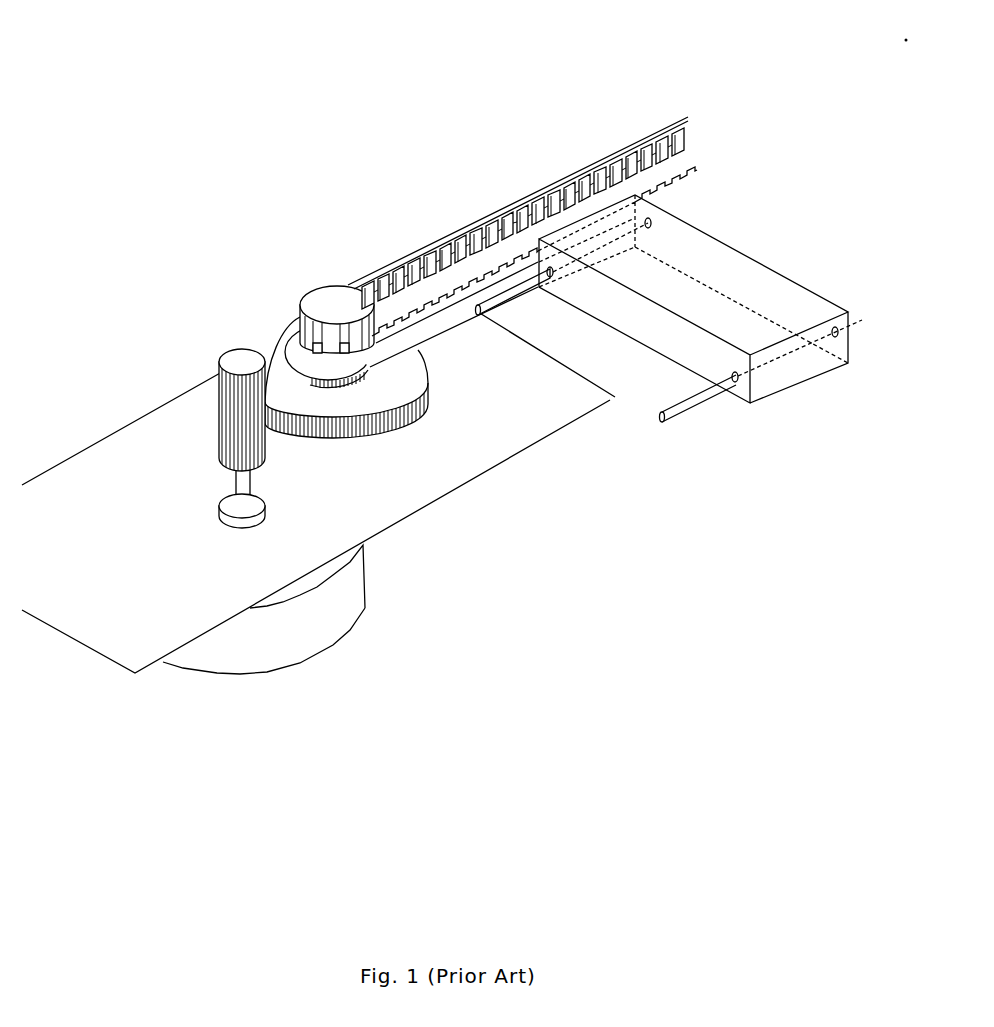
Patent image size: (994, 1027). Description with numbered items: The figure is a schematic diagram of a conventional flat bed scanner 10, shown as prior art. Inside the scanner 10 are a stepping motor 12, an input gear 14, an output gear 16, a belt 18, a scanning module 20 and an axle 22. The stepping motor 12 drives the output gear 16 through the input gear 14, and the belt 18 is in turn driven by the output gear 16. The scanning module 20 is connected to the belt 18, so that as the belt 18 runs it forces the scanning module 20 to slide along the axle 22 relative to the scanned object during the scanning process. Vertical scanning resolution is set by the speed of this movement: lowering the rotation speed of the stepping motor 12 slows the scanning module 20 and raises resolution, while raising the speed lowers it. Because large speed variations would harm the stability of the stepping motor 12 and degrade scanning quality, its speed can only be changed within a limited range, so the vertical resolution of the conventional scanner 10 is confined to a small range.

The flat bed scanner 10 is at (323, 256).
The stepping motor 12 is at (300, 632).
The input gear 14 is at (252, 432).
The output gear 16 is at (390, 383).
The belt 18 is at (504, 216).
The scanning module 20 is at (690, 285).
The axle 22 is at (517, 288).